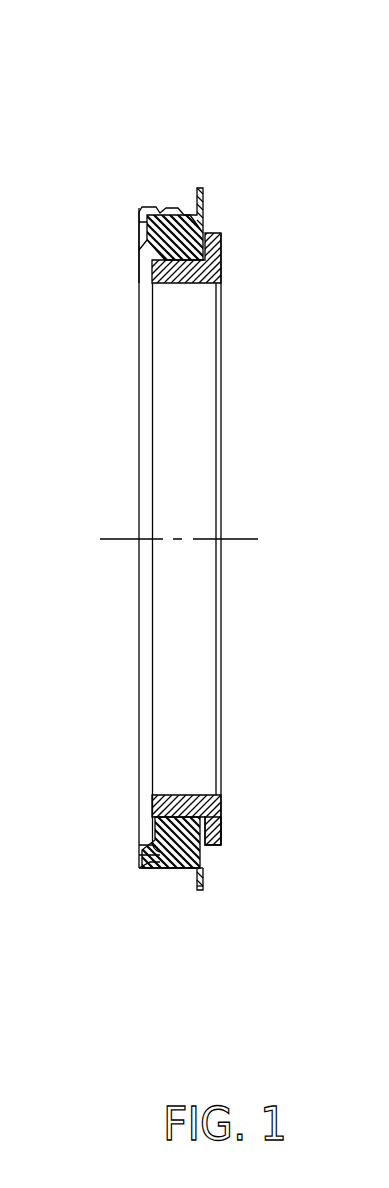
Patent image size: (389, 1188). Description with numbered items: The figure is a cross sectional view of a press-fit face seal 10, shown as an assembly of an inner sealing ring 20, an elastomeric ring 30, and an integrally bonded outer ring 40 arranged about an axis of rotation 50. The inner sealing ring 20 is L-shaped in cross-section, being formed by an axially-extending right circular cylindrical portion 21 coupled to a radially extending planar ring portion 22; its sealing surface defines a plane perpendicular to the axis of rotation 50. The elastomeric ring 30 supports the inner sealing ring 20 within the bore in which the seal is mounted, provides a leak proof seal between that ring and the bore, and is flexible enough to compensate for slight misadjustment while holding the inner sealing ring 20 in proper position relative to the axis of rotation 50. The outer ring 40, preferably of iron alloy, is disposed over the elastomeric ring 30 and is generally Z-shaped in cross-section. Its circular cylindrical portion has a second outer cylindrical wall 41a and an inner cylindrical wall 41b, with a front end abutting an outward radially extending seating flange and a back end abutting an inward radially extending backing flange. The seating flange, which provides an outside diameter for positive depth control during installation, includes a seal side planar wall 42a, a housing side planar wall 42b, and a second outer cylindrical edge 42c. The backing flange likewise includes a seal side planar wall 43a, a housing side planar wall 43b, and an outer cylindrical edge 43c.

The face seal 10 is at (148, 78).
The inner sealing ring 20 is at (212, 272).
The axially-extending right circular cylindrical portion 21 is at (185, 800).
The radially extending planar ring portion 22 is at (212, 828).
The elastomeric ring 30 is at (190, 222).
The outer ring 40 is at (210, 185).
The second outer cylindrical wall 41a is at (175, 868).
The inner cylindrical wall 41b is at (193, 866).
The seal side planar wall 42a is at (205, 882).
The housing side planar wall 42b is at (200, 868).
The second outer cylindrical edge 42c is at (198, 890).
The seal side planar wall 43a is at (153, 812).
The housing side planar wall 43b is at (140, 857).
The outer cylindrical edge 43c is at (148, 850).
The axis of rotation 50 is at (197, 540).